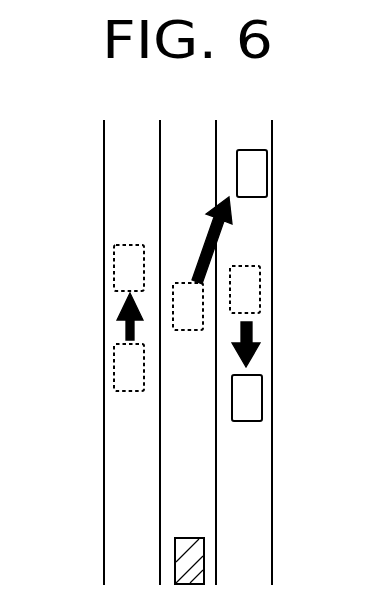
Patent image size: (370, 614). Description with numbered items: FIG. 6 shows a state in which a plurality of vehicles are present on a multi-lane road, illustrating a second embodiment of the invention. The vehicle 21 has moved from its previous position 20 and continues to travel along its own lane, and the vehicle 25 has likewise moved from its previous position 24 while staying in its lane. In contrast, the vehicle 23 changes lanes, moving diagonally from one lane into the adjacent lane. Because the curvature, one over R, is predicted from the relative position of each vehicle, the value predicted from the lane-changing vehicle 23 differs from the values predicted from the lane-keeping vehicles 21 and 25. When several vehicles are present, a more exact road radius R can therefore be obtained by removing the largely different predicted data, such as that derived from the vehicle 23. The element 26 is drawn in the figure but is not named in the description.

The previous position of vehicle 20 is at (112, 355).
The vehicle 21 is at (112, 256).
The vehicle 23 is at (267, 153).
The previous position of vehicle 24 is at (260, 291).
The vehicle 25 is at (262, 393).
The stationary obstacle 26 is at (204, 553).